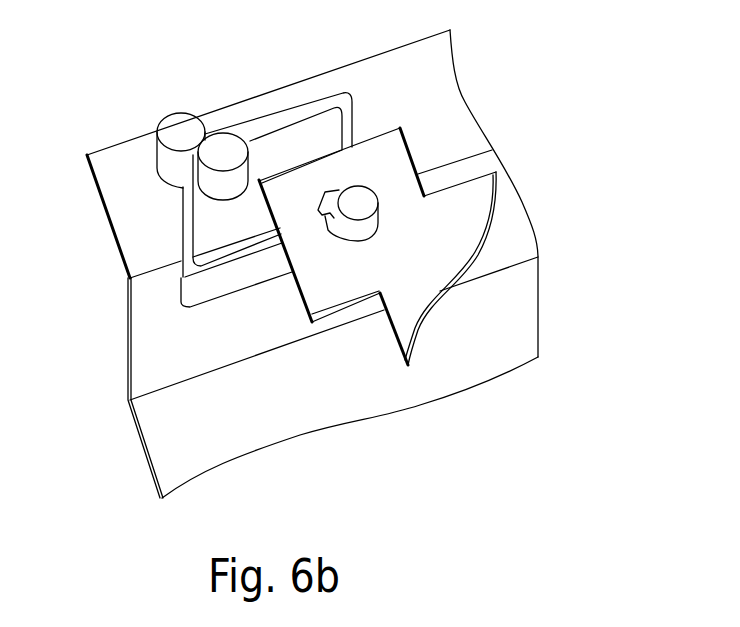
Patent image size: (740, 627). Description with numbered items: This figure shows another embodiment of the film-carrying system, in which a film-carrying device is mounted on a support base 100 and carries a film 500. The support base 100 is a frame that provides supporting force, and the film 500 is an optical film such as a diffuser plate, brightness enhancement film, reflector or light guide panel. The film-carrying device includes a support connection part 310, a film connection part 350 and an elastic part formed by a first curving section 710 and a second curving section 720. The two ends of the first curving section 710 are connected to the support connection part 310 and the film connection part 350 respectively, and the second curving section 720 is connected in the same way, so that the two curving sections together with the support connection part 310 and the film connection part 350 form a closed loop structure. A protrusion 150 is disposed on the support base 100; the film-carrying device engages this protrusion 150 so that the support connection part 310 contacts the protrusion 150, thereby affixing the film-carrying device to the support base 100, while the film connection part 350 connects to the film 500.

The support base 100 is at (423, 67).
The protrusion 150 is at (223, 150).
The support connection part 310 is at (183, 127).
The film connection part 350 is at (352, 205).
The film 500 is at (468, 210).
The first curving section 710 is at (300, 110).
The second curving section 720 is at (187, 223).